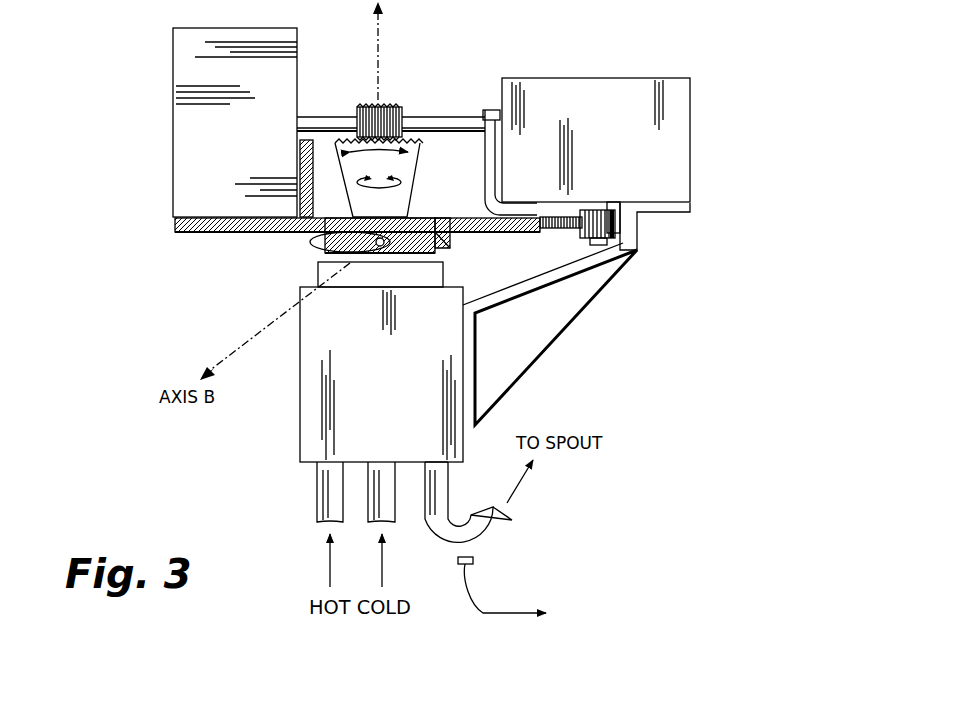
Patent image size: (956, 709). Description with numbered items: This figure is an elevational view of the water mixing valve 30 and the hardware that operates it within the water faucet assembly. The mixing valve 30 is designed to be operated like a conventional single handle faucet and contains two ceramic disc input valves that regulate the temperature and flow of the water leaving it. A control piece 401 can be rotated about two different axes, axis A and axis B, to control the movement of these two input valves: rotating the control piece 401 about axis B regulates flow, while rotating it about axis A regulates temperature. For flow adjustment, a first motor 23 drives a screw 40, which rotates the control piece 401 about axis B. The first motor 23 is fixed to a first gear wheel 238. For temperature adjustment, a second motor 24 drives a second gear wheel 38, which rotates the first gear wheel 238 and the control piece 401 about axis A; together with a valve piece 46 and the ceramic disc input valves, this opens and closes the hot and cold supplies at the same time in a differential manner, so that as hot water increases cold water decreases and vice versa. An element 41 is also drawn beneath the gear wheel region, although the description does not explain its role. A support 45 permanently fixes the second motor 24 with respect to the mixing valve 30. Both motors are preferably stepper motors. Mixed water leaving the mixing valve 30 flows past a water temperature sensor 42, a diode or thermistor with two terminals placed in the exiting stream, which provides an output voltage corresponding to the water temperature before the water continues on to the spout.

The first motor 23 is at (173, 118).
The second motor 24 is at (693, 157).
The water mixing valve 30 is at (308, 327).
The second gear wheel 38 is at (622, 232).
The screw 40 is at (395, 110).
The eccentric cam 41 is at (325, 235).
The water temperature sensor 42 is at (457, 564).
The support 45 is at (692, 210).
The valve piece 46 is at (323, 252).
The first gear wheel 238 is at (175, 225).
The control piece 401 is at (342, 140).